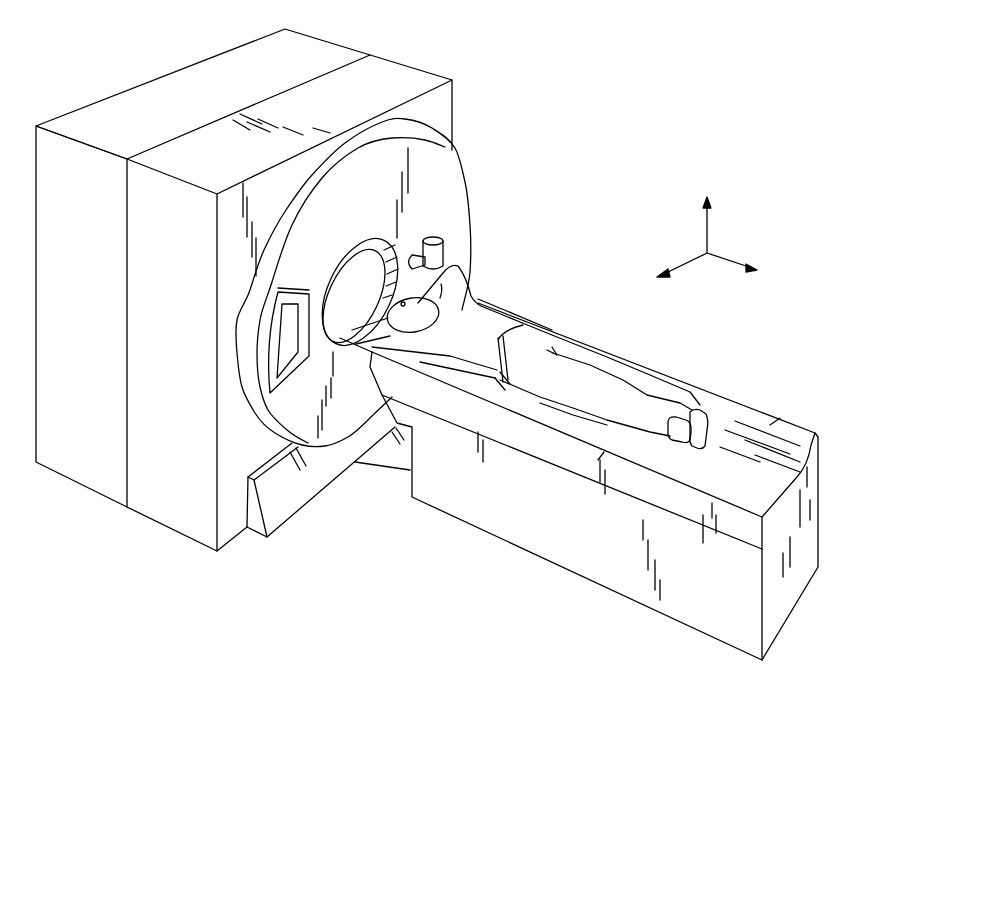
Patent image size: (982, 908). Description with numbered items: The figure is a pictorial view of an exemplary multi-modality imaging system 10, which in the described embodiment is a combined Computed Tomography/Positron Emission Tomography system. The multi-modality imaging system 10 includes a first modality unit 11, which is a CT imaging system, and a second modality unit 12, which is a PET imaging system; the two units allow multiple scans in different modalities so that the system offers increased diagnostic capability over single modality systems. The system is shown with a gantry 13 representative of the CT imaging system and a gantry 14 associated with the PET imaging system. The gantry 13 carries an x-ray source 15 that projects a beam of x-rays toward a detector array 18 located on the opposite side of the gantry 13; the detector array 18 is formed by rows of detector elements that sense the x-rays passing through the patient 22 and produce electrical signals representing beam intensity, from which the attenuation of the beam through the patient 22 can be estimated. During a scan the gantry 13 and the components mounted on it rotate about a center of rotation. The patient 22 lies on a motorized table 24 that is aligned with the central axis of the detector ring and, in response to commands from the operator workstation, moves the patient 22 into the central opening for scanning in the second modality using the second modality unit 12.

The multi-modality imaging system 10 is at (744, 32).
The first modality unit 11 is at (198, 518).
The second modality unit 12 is at (88, 468).
The gantry 13 is at (432, 113).
The gantry 14 is at (107, 118).
The x-ray source 15 is at (447, 257).
The detector array 18 is at (290, 368).
The patient 22 is at (483, 322).
The motorized table 24 is at (514, 528).